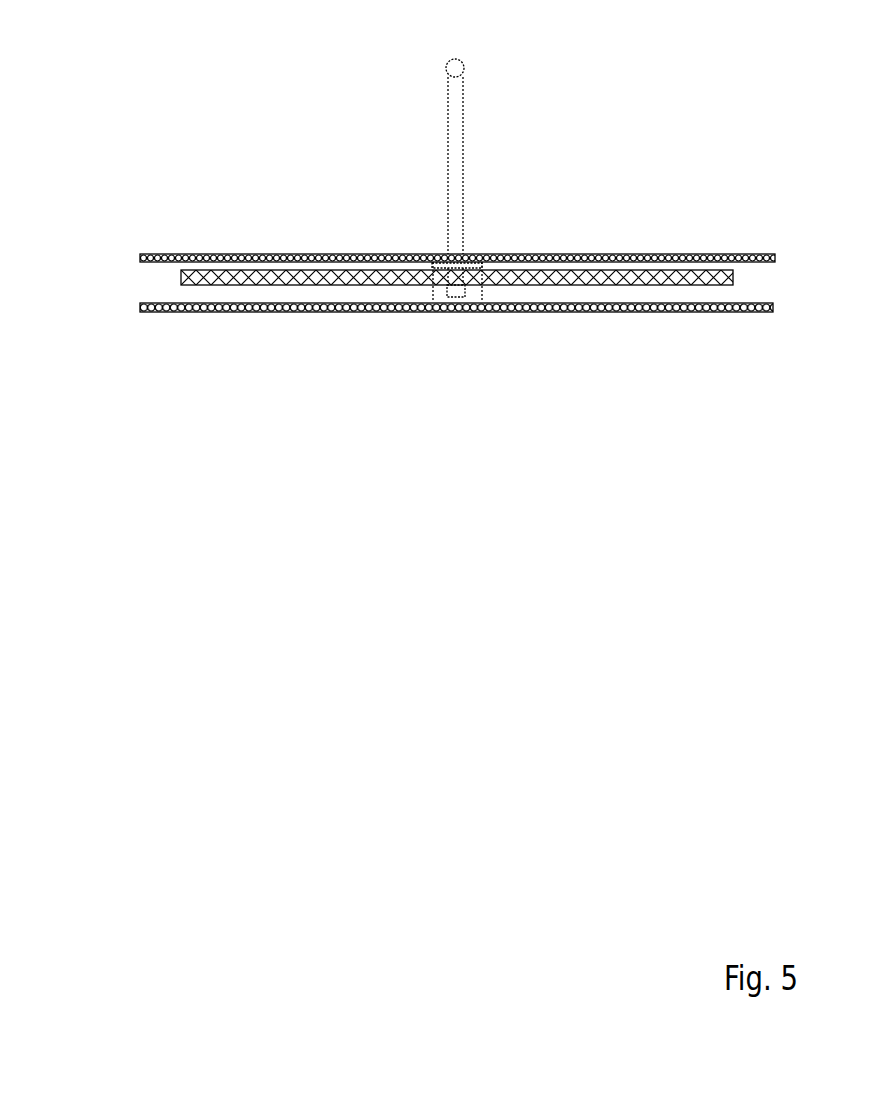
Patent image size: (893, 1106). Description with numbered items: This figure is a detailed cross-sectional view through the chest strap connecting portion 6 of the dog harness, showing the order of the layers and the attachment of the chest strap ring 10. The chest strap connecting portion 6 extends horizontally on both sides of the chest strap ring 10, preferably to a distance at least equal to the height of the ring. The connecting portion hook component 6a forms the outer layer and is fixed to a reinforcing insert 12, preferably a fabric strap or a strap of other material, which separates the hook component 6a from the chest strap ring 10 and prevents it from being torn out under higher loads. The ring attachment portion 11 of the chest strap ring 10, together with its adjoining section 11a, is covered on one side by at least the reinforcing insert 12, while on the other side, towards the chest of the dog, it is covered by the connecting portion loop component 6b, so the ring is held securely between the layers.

The chest strap connecting portion 6 is at (406, 281).
The connecting portion hook component 6a is at (250, 250).
The connecting portion loop component 6b is at (247, 315).
The reinforcing insert 12 is at (148, 251).
The chest strap ring 10 is at (470, 72).
The ring attachment portion 11 is at (445, 313).
The flange of insert 11a is at (453, 251).